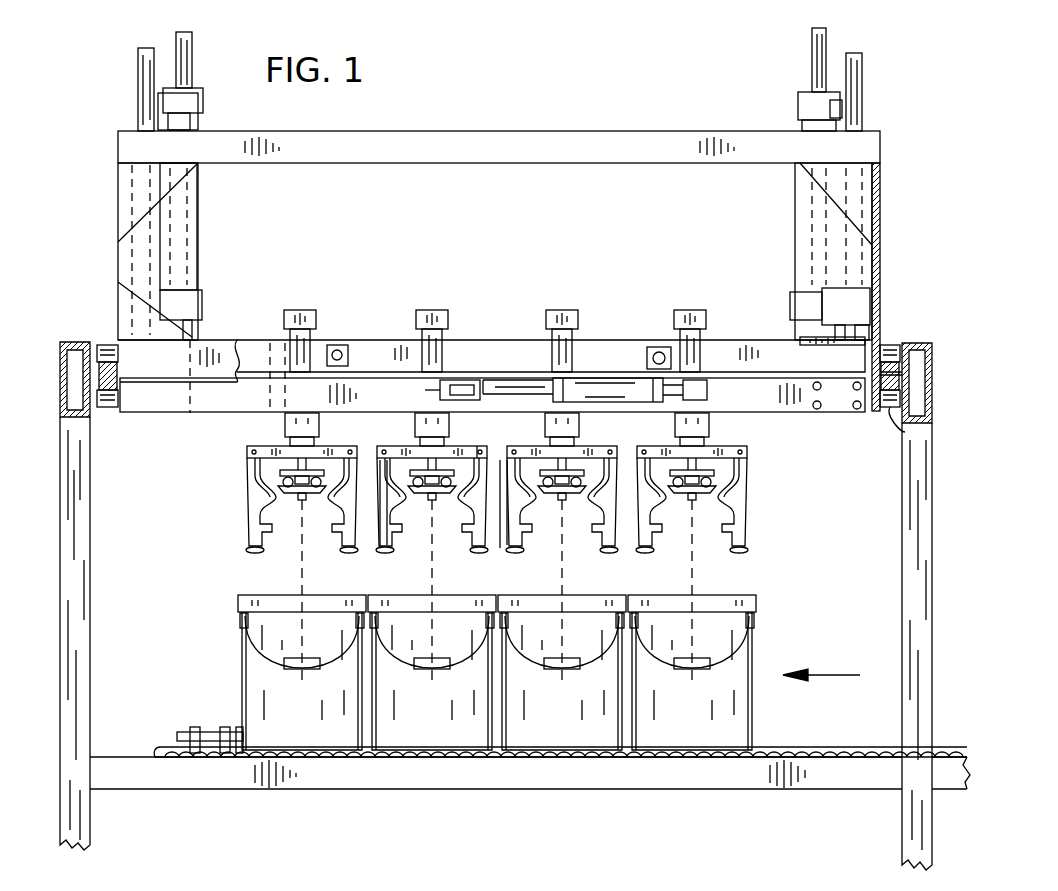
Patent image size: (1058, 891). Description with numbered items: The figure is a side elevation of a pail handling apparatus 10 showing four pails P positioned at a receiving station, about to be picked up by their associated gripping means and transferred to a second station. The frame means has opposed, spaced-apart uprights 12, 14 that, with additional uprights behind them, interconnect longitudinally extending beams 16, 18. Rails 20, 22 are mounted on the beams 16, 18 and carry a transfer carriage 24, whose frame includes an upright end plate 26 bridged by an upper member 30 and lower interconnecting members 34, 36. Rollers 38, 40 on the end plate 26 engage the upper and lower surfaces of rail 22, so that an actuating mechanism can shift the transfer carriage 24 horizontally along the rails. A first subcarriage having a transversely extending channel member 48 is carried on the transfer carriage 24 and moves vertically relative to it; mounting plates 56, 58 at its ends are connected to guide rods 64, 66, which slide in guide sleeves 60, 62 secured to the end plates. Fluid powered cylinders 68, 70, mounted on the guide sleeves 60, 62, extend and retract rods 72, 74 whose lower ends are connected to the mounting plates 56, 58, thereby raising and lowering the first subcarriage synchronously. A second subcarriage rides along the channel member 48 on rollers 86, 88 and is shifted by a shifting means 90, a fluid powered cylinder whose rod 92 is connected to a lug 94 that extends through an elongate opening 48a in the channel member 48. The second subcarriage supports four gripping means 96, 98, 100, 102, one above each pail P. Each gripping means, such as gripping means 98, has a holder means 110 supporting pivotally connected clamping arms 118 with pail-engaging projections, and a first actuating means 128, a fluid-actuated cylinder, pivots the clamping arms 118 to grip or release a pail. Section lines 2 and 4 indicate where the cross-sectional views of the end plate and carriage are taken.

The apparatus 10 is at (523, 108).
The upright 12 is at (90, 615).
The upright 14 is at (902, 582).
The longitudinally extending beam 16 is at (62, 372).
The longitudinally extending beam 18 is at (924, 346).
The rail 20 is at (102, 346).
The rail 22 is at (888, 360).
The transfer carriage 24 is at (396, 130).
The end plate 26 is at (878, 262).
The upper member 30 is at (662, 150).
The lower interconnecting member 34 is at (168, 378).
The lower interconnecting member 36 is at (725, 356).
The roller 38 is at (885, 346).
The roller 40 is at (905, 432).
The channel member 48 is at (790, 402).
The elongate opening 48a is at (440, 390).
The mounting plate 56 is at (800, 340).
The mounting plate 58 is at (200, 334).
The guide sleeve 60 is at (868, 222).
The guide sleeve 62 is at (132, 200).
The guide rod 64 is at (862, 108).
The guide rod 66 is at (146, 72).
The fluid powered cylinder 68 is at (795, 235).
The fluid powered cylinder 70 is at (197, 228).
The rod 72 is at (812, 60).
The rod 74 is at (192, 62).
The roller 86 is at (338, 348).
The roller 88 is at (660, 350).
The shifting means 90 is at (612, 386).
The rod 92 is at (520, 380).
The lug 94 is at (462, 378).
The gripping means 96 is at (246, 482).
The gripping means 98 is at (410, 538).
The gripping means 100 is at (560, 538).
The gripping means 102 is at (690, 538).
The holder means 110 is at (470, 447).
The clamping arm 118 is at (385, 490).
The first actuating means 128 is at (437, 308).
The section line 2- 2 is at (855, 62).
The section line 4- 4 is at (205, 82).
The pail P is at (247, 597).